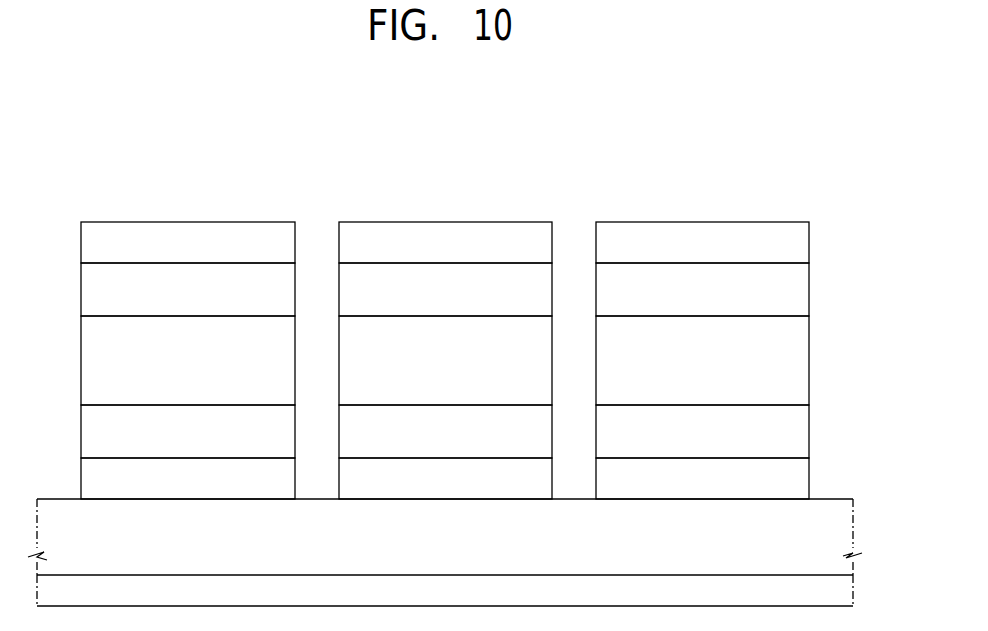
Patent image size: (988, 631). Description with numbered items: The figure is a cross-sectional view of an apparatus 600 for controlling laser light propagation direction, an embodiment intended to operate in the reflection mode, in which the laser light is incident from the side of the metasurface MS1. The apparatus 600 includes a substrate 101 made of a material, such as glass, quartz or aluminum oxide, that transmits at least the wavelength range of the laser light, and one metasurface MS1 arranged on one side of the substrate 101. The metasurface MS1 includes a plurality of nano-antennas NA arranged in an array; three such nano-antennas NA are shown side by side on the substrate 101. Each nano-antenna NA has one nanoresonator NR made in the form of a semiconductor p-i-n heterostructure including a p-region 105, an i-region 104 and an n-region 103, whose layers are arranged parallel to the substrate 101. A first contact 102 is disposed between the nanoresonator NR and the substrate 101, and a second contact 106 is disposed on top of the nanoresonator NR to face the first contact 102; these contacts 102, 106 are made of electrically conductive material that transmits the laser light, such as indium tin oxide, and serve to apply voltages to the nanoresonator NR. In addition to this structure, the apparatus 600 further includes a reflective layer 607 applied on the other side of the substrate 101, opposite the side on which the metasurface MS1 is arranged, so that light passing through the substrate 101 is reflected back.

The apparatus for controlling laser light propagation direction 600 is at (845, 179).
The substrate 101 is at (117, 549).
The reflective layer 607 is at (117, 602).
The first contact 102 is at (209, 490).
The n-region 103 is at (209, 441).
The i-region 104 is at (209, 371).
The p-region 105 is at (209, 299).
The second contact 106 is at (209, 256).
The metasurface MS1 is at (445, 182).
The nano-antenna NA is at (41, 360).
The nanoresonator NR is at (850, 360).